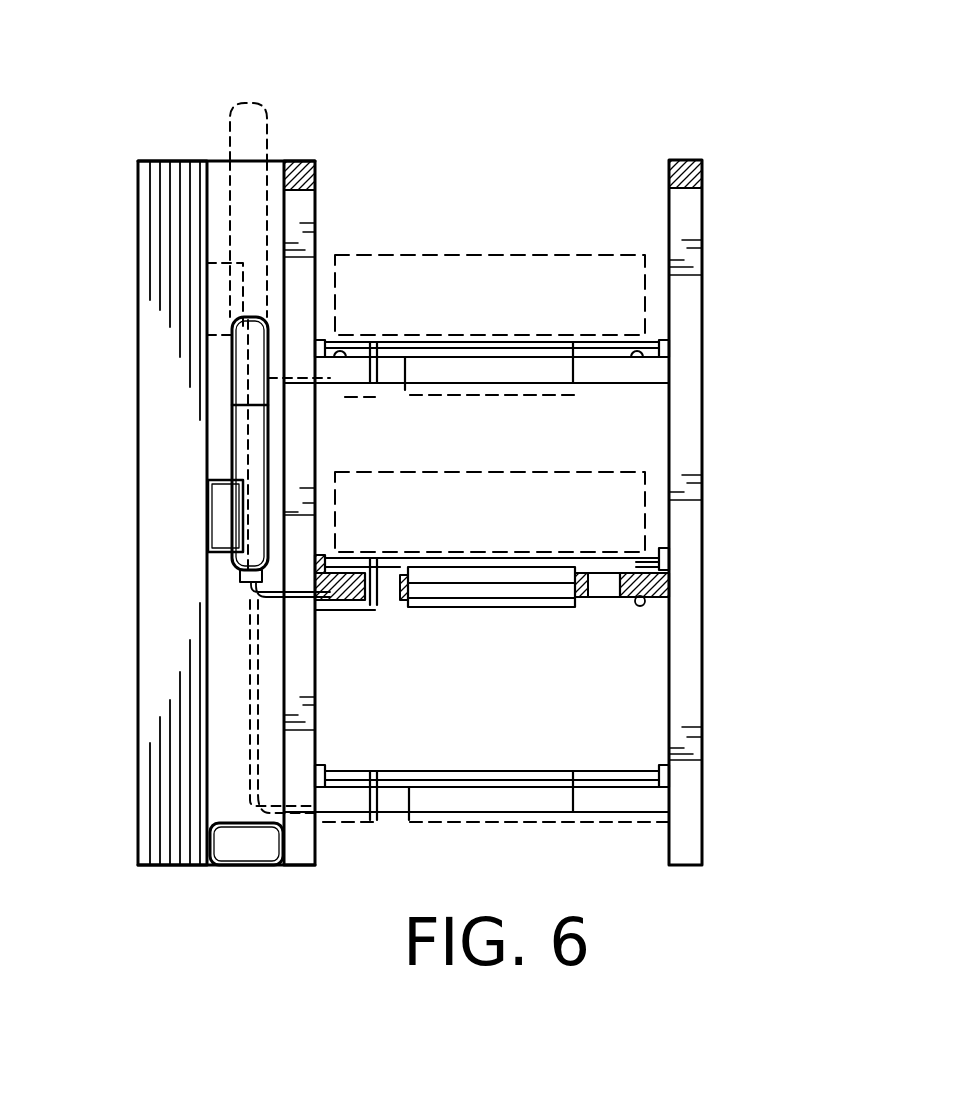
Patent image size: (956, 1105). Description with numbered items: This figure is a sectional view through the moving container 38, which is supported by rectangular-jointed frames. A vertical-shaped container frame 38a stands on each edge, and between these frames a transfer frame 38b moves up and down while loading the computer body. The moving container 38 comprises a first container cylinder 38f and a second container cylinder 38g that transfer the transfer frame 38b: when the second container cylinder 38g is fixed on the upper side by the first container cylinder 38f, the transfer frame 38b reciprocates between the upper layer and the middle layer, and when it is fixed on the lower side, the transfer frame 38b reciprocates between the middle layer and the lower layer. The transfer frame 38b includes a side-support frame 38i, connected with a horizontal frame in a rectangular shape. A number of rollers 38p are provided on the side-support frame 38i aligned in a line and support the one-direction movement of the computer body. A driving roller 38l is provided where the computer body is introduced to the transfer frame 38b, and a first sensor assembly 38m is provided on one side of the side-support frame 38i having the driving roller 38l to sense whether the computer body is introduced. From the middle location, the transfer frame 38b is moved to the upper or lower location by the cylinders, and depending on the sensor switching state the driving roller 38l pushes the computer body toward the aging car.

The moving container 38 is at (750, 130).
The container frame 38a is at (700, 440).
The transfer frame 38b is at (598, 634).
The first container cylinder 38f is at (165, 497).
The second container cylinder 38g is at (230, 415).
The side-support frame 38i is at (672, 593).
The driving roller 38l is at (503, 601).
The first sensor assembly 38m is at (372, 606).
The rollers 38p is at (645, 565).